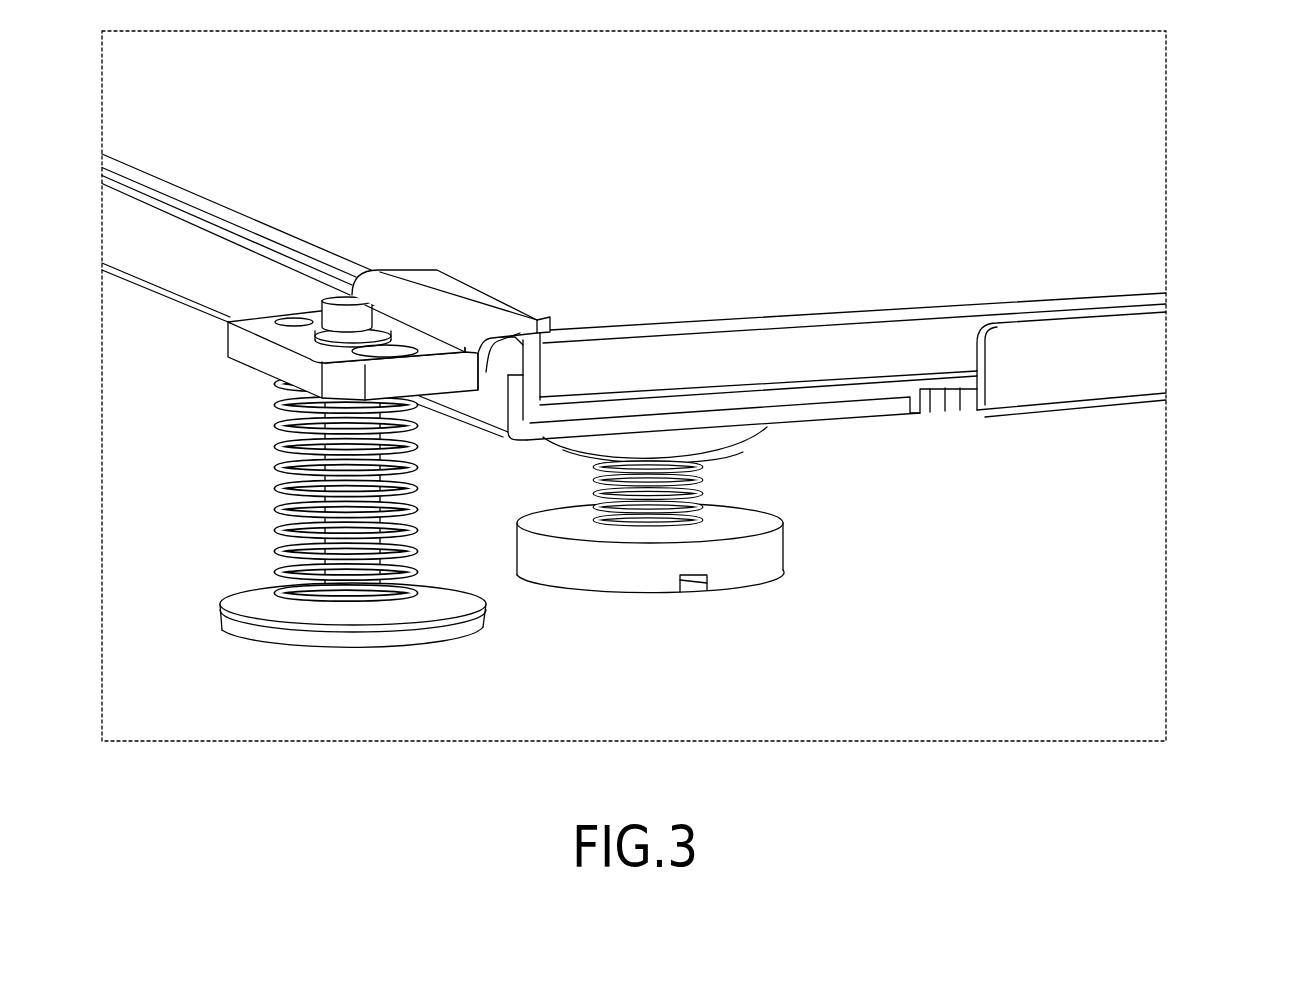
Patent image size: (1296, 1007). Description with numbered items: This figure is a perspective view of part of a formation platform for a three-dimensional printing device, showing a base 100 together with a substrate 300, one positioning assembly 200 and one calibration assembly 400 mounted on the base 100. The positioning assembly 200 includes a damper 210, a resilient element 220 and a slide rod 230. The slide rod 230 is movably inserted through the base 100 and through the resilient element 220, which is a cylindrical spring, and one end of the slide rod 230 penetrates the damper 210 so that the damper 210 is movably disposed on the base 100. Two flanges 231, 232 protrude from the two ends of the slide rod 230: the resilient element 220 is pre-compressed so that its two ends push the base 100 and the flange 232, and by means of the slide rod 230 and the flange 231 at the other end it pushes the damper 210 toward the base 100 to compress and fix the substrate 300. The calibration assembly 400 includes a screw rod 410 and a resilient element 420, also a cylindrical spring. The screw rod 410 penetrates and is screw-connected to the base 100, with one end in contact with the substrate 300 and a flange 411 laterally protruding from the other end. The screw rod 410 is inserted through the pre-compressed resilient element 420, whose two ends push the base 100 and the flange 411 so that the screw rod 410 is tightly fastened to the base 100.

The base 100 is at (1050, 411).
The positioning assembly 200 is at (172, 393).
The damper 210 is at (287, 336).
The resilient element 220 is at (283, 430).
The slide rod 230 is at (282, 511).
The flange 231 is at (385, 328).
The flange 232 is at (447, 628).
The substrate 300 is at (1137, 230).
The calibration assembly 400 is at (862, 453).
The screw rod 410 is at (700, 508).
The flange 411 is at (753, 572).
The resilient element 420 is at (700, 488).